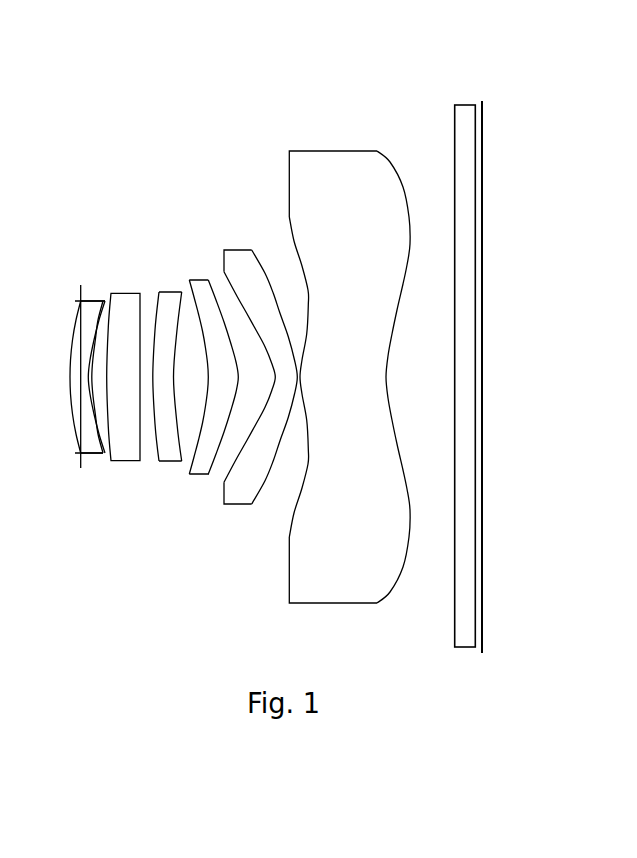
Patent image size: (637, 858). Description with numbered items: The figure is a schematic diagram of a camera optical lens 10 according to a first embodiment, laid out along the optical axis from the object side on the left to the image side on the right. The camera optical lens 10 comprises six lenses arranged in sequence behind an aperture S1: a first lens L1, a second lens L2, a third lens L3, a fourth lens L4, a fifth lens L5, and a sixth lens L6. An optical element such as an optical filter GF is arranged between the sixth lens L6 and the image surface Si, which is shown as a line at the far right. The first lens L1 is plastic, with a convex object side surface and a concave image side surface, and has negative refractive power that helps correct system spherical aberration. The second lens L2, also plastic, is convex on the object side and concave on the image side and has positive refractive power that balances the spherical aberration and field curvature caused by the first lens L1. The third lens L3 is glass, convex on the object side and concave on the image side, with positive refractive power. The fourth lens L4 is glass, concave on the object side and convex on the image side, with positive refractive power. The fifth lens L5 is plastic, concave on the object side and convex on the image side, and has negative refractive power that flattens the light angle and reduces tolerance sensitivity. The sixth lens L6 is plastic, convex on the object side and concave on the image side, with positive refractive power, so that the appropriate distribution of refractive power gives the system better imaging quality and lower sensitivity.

The camera optical lens 10 is at (292, 43).
The aperture S1 is at (79, 376).
The first lens L1 is at (87, 364).
The second lens L2 is at (123, 366).
The third lens L3 is at (167, 364).
The fourth lens L4 is at (213, 364).
The fifth lens L5 is at (260, 365).
The sixth lens L6 is at (349, 363).
The optical filter GF is at (461, 365).
The image surface Si is at (481, 364).